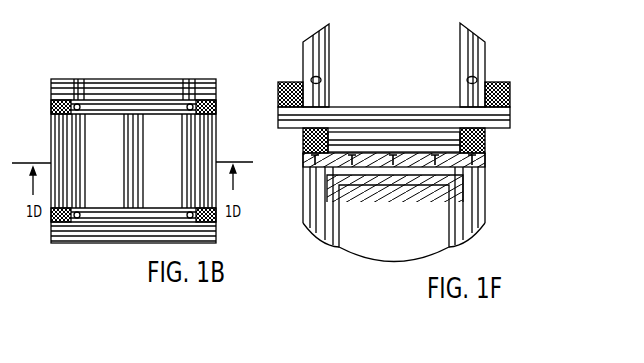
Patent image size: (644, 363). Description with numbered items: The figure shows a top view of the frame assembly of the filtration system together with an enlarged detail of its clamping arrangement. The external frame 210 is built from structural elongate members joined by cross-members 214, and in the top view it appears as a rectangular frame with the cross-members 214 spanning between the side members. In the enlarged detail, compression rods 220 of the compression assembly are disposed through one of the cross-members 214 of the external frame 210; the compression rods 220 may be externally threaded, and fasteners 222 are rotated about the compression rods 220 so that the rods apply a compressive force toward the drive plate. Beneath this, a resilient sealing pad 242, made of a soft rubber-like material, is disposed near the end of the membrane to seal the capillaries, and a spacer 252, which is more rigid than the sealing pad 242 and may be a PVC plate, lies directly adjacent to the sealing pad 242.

In FIG. 1B, the external frame 210 is at (203, 142).
In FIG. 1F, the compression rods 220 is at (328, 45).
In FIG. 1F, the fasteners 222 is at (321, 80).
In FIG. 1F, the cross-members 214 is at (480, 158).
In FIG. 1F, the spacer 252 is at (475, 183).
In FIG. 1F, the sealing pad 242 is at (462, 193).